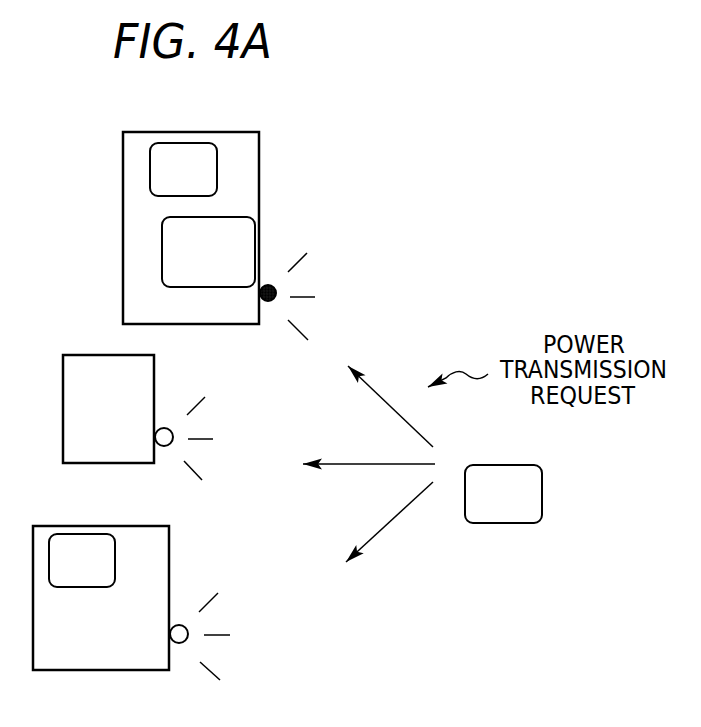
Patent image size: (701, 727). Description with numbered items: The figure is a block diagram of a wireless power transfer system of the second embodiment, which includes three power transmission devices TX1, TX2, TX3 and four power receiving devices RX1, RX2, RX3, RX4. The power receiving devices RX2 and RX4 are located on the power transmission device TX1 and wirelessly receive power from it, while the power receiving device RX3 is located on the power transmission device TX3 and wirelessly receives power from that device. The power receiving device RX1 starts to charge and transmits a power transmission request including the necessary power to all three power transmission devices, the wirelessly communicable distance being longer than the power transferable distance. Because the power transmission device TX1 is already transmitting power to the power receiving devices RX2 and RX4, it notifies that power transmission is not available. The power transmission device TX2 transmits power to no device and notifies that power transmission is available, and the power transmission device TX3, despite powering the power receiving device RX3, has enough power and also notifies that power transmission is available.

The power transmission device TX1 is at (219, 236).
The power transmission device TX2 is at (138, 417).
The power transmission device TX3 is at (131, 603).
The power receiving device RX1 is at (422, 464).
The power receiving device RX2 is at (208, 252).
The power receiving device RX3 is at (82, 560).
The power receiving device RX4 is at (183, 169).